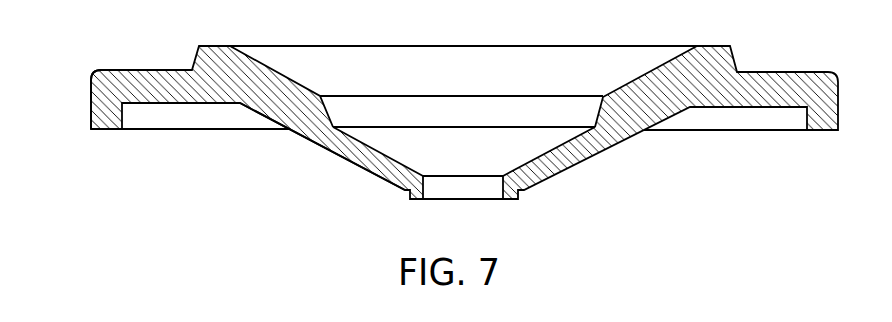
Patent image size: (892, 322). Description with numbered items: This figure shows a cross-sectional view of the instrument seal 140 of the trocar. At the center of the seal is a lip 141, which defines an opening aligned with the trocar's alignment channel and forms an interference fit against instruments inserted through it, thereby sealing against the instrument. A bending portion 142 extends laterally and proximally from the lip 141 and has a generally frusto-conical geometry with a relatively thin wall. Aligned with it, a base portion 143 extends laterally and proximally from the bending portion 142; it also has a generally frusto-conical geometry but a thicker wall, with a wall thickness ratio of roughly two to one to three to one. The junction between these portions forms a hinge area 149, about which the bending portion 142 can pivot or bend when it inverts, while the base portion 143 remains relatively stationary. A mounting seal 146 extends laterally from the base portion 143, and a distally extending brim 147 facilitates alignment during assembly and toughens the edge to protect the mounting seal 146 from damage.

The instrument seal 140 is at (172, 205).
The lip 141 is at (425, 184).
The bending portion 142 is at (363, 168).
The base portion 143 is at (282, 126).
The mounting seal 146 is at (164, 105).
The brim 147 is at (90, 118).
The hinge area 149 is at (340, 126).